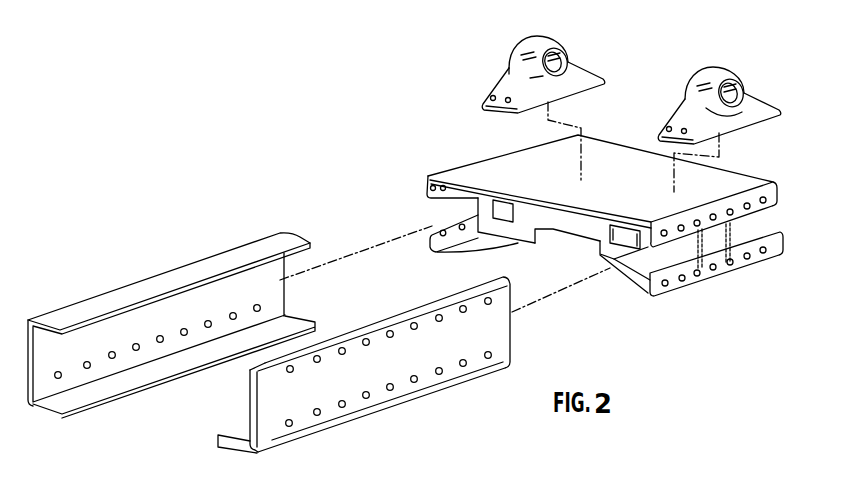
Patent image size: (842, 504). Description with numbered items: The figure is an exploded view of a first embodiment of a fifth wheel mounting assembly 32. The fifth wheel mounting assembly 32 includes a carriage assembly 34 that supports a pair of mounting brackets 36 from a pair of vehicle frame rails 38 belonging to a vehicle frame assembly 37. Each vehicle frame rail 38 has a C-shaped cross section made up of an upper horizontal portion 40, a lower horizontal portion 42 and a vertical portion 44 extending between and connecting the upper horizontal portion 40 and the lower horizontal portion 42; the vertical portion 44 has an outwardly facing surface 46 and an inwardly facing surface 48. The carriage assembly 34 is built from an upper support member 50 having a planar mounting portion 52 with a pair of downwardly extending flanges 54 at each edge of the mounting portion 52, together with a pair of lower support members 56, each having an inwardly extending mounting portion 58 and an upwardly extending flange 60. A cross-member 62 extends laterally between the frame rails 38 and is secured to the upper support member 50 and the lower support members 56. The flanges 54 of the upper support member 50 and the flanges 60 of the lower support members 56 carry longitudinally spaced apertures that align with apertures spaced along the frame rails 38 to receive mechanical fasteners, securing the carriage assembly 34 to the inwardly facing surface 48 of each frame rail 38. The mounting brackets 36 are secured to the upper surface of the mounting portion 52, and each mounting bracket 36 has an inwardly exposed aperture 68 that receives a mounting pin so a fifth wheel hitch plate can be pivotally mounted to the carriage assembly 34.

The fifth wheel mounting assembly 32 is at (597, 214).
The carriage assembly 34 is at (691, 267).
The mounting bracket 36 is at (614, 80).
The vehicle frame assembly 37 is at (168, 316).
The vehicle frame rail 38 is at (168, 336).
The upper horizontal portion 40 is at (98, 305).
The lower horizontal portion 42 is at (50, 413).
The vertical portion 44 is at (25, 357).
The outwardly facing surface 46 is at (287, 397).
The inwardly facing surface 48 is at (50, 368).
The upper support member 50 is at (600, 160).
The mounting portion 52 is at (626, 167).
The downwardly extending flange 54 is at (427, 191).
The lower support member 56 is at (563, 242).
The inwardly extending mounting portion 58 is at (477, 243).
The upwardly extending flange 60 is at (432, 236).
The cross-member 62 is at (553, 231).
The inwardly exposed aperture 68 is at (578, 63).